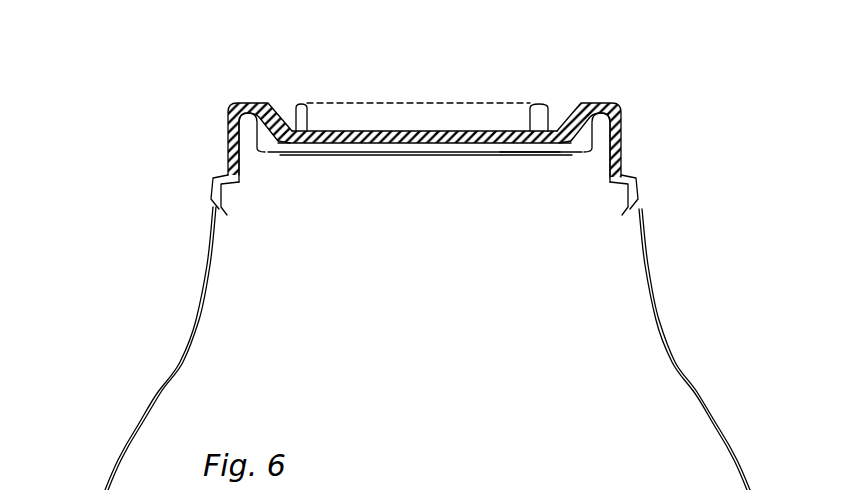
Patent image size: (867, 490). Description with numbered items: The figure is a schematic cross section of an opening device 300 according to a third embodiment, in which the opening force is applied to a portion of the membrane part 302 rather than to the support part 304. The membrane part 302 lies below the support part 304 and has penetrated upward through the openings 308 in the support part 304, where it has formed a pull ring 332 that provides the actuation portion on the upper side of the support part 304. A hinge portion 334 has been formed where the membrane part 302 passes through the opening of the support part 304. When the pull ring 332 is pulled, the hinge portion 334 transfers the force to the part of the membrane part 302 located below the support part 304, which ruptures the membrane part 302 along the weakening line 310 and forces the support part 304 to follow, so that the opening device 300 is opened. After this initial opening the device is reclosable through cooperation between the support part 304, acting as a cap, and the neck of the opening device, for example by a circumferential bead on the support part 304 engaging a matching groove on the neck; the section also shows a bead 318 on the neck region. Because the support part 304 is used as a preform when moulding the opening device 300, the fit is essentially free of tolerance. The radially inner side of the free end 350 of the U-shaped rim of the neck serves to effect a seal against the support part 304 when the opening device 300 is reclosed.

The opening device 300 is at (163, 93).
The membrane part 302 is at (407, 155).
The support part 304 is at (621, 103).
The openings 308 is at (533, 155).
The weakening line 310 is at (263, 157).
The neck thread / bead 318 is at (218, 220).
The pull ring 332 is at (297, 103).
The hinge portion 334 is at (548, 104).
The free end of the U-shaped rim of the neck 350 is at (595, 153).